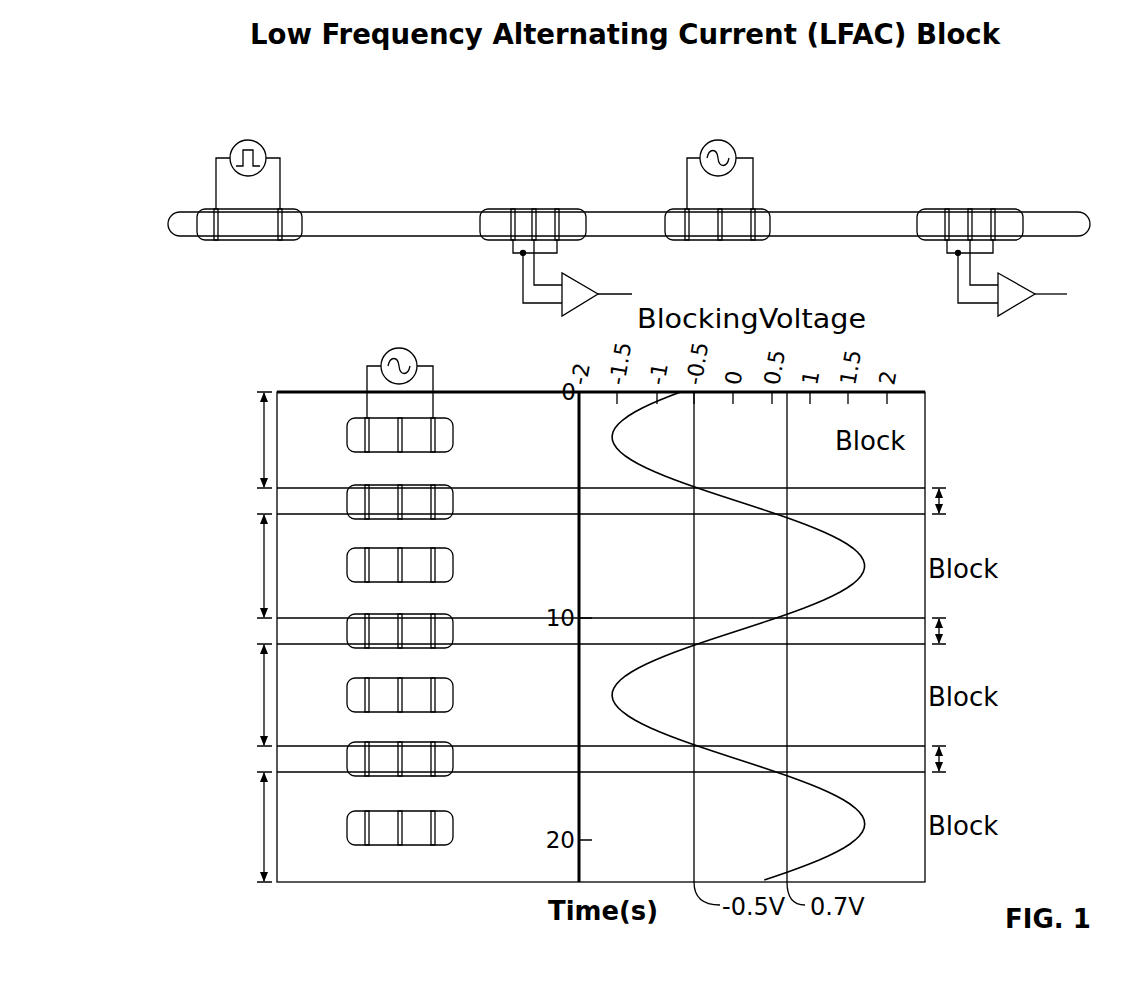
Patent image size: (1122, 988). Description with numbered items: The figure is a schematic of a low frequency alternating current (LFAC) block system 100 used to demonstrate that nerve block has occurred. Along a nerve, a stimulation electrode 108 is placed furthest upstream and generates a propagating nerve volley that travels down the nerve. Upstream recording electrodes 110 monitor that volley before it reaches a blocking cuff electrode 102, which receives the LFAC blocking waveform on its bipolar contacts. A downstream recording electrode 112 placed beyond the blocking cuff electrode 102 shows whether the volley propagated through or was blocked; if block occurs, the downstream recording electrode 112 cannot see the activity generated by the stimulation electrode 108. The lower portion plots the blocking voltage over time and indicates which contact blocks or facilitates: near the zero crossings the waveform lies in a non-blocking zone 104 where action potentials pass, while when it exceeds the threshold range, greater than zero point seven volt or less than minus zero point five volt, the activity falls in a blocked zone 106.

The low frequency alternating current block system 100 is at (140, 46).
The blocking cuff electrode 102 is at (754, 207).
The non-blocking zone 104 is at (979, 623).
The blocked zone 106 is at (227, 637).
The stimulation electrode 108 is at (284, 207).
The upstream recording electrodes 110 is at (535, 208).
The downstream recording electrode 112 is at (971, 208).